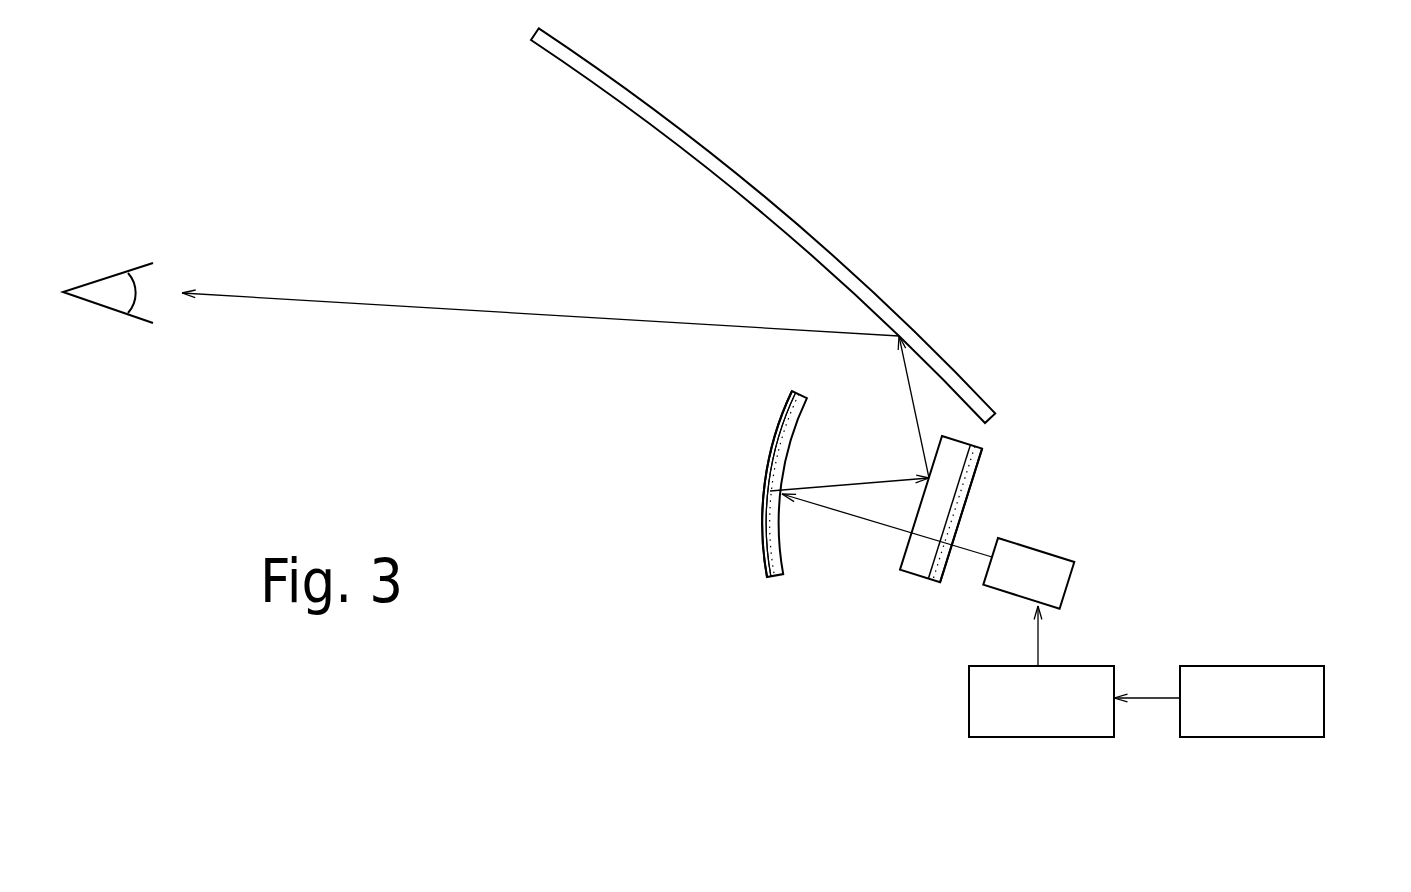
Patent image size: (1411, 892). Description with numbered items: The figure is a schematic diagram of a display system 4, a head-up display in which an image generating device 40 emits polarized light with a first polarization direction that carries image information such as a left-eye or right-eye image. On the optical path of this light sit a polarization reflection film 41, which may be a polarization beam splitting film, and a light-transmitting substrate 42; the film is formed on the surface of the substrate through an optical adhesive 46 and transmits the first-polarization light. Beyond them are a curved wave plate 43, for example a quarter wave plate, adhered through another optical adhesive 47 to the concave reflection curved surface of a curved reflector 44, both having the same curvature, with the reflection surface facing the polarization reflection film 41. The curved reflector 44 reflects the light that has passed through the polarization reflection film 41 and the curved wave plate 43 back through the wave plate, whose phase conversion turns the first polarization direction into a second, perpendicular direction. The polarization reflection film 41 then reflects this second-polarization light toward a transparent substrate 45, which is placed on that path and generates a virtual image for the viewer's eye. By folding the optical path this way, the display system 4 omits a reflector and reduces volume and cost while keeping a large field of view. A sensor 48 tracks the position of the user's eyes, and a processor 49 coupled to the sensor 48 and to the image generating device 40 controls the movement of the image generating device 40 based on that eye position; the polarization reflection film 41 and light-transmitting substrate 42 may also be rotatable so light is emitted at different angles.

The display system 4 is at (649, 718).
The image generating device 40 is at (1075, 580).
The polarization reflection film 41 is at (900, 563).
The light-transmitting substrate 42 is at (982, 460).
The curved wave plate 43 is at (803, 413).
The curved reflector 44 is at (780, 432).
The transparent substrate 45 is at (742, 176).
The optical adhesive 46 is at (962, 492).
The optical adhesive 47 is at (763, 517).
The sensor 48 is at (1324, 684).
The processor 49 is at (969, 680).